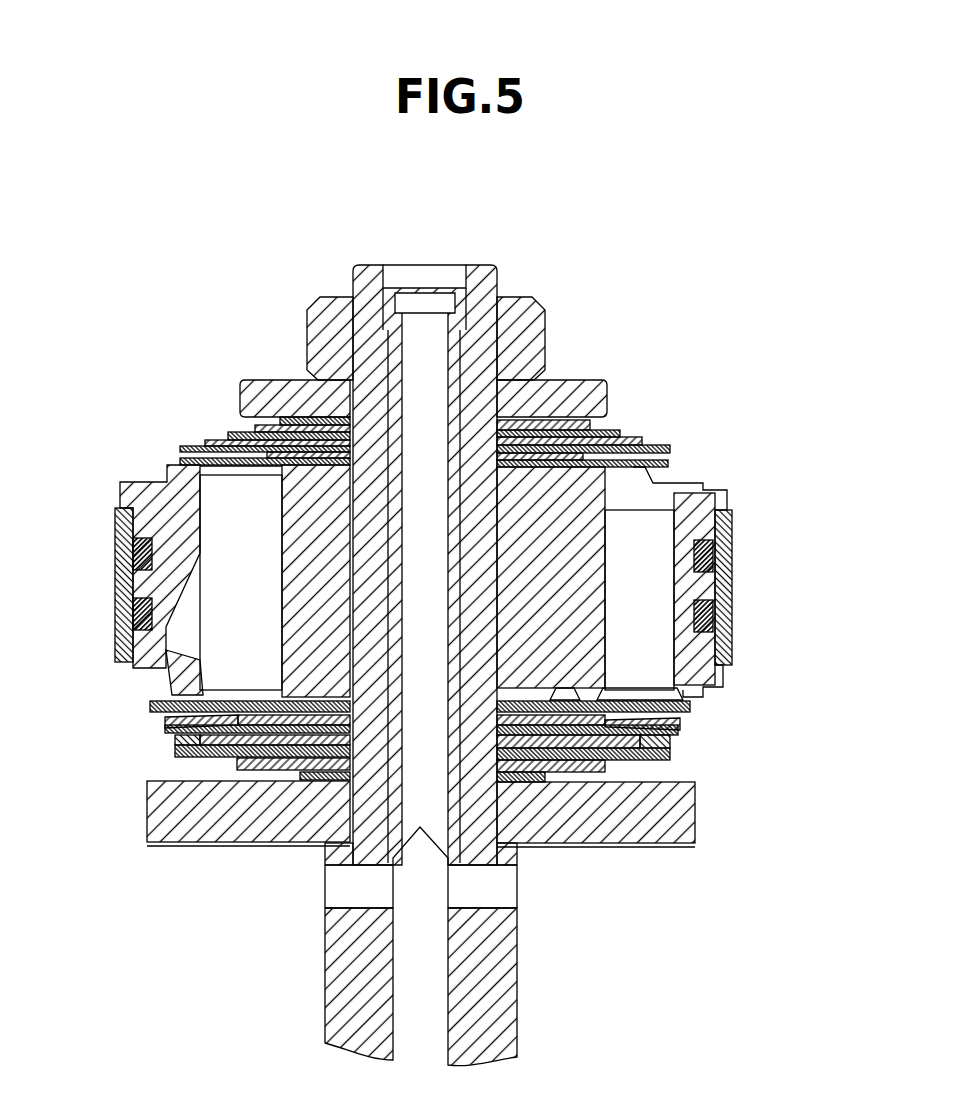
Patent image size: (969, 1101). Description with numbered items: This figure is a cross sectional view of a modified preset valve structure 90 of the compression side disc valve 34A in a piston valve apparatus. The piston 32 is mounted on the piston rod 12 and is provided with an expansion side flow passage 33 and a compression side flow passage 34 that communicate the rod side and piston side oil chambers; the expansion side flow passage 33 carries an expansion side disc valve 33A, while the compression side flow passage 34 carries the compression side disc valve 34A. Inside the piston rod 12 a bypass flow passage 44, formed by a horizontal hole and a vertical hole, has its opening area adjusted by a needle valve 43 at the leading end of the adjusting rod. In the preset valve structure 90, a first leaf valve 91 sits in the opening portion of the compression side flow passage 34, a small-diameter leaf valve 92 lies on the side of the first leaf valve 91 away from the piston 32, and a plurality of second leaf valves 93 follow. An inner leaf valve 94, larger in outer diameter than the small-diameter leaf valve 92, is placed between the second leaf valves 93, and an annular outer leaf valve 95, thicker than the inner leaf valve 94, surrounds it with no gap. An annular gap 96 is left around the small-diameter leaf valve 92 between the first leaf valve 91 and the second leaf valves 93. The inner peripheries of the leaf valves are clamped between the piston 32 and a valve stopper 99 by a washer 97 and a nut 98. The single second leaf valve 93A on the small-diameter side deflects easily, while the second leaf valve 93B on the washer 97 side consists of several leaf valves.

The piston rod 12 is at (350, 1010).
The piston 32 is at (120, 492).
The expansion side flow passage 33 is at (232, 547).
The expansion side disc valve 33A is at (218, 430).
The compression side flow passage 34 is at (647, 530).
The compression side disc valve 34A is at (652, 793).
The needle valve 43 is at (438, 972).
The bypass flow passage 44 is at (348, 892).
The preset valve structure 90 is at (649, 793).
The first leaf valve 91 is at (710, 705).
The small-diameter leaf valve 92 is at (522, 716).
The second leaf valves 93 is at (633, 812).
The second leaf valve 93A is at (680, 722).
The second leaf valve 93B is at (633, 837).
The inner leaf valve 94 is at (523, 768).
The outer leaf valve 95 is at (680, 743).
The annular gap 96 is at (625, 718).
The washer 97 is at (607, 393).
The nut 98 is at (545, 320).
The valve stopper 99 is at (170, 814).